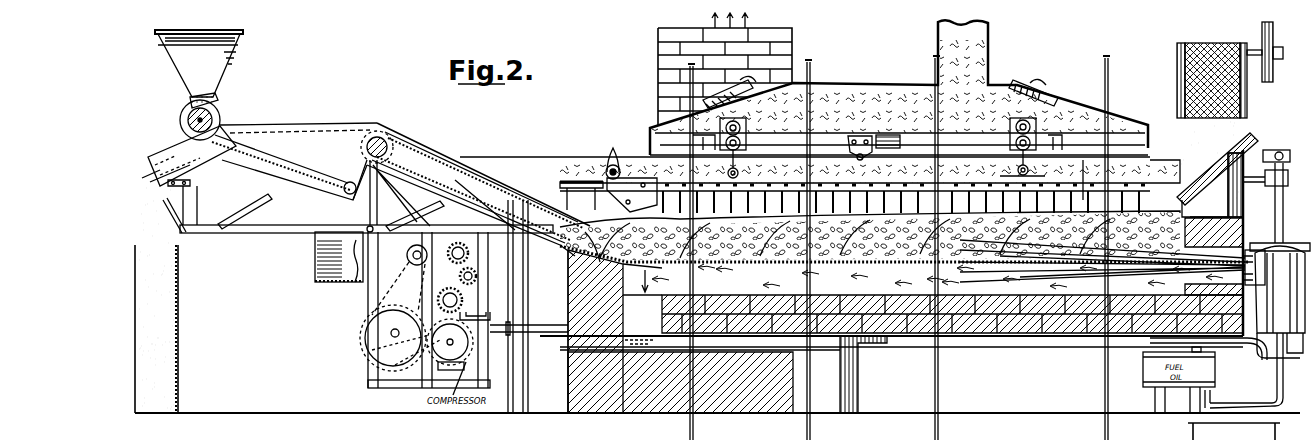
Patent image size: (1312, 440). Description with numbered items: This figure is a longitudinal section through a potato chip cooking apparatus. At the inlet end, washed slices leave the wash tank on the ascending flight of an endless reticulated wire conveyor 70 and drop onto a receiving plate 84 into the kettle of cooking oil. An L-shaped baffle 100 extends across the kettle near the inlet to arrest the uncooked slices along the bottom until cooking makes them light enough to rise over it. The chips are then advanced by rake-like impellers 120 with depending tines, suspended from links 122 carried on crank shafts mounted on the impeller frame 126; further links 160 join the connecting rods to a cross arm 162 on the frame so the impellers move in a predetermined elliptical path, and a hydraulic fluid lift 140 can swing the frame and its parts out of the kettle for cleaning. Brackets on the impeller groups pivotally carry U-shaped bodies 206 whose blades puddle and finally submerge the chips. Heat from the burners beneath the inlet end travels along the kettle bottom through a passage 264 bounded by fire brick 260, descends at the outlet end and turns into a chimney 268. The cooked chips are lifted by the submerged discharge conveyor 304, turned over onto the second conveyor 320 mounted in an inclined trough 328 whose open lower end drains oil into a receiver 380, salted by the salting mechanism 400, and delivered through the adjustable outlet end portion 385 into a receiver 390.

The salting mechanism 400 is at (199, 69).
The adjustable outlet end portion 385 is at (177, 153).
The trough 328 is at (263, 175).
The second conveyor 320 is at (333, 187).
The discharge conveyor 304 is at (433, 163).
The receiver 380 is at (326, 283).
The receiver 390 is at (179, 357).
The U-shaped body 206 is at (580, 180).
The chimney 268 is at (787, 57).
The cross arm 162 is at (842, 159).
The impeller frame 126 is at (897, 136).
The links 160 is at (983, 163).
The links 122 is at (1040, 160).
The L-shaped baffle 100 is at (1083, 160).
The impellers 120 is at (1127, 181).
The endless conveyor 70 is at (1180, 60).
The receiving plate 84 is at (1252, 137).
The hydraulic fluid lift 140 is at (1257, 216).
The passage 264 is at (904, 269).
The fire brick 260 is at (1250, 268).